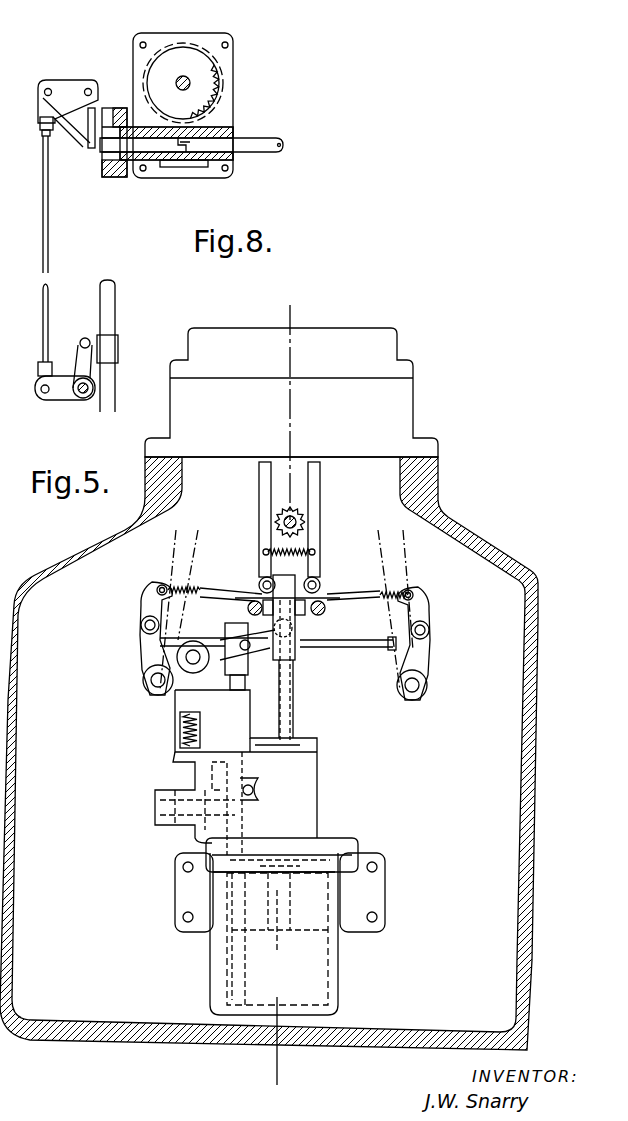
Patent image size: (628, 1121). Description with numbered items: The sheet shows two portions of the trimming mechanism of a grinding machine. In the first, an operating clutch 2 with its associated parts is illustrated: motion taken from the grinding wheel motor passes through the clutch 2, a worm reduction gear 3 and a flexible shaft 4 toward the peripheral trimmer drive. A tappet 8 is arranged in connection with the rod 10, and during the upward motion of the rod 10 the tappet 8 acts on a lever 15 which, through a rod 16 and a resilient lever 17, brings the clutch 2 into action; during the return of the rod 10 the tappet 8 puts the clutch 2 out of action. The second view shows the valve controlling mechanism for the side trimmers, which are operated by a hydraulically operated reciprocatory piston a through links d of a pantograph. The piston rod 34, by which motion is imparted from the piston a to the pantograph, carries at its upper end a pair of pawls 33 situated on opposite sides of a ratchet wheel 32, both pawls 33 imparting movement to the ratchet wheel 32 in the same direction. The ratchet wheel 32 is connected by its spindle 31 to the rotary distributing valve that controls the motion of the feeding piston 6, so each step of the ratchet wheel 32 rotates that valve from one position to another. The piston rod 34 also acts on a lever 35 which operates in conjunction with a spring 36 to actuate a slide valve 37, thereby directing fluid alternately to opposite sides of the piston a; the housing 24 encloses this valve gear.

In FIG. 8, the clutch 2 is at (106, 122).
In FIG. 8, the worm reduction gear 3 is at (193, 127).
In FIG. 8, the flexible shaft 4 is at (190, 80).
In FIG. 8, the tappet 8 is at (118, 353).
In FIG. 8, the rod 10 is at (110, 302).
In FIG. 8, the lever 15 is at (60, 380).
In FIG. 8, the rod 16 is at (49, 303).
In FIG. 8, the resilient lever 17 is at (65, 93).
In FIG. 5, the feeding piston 6 is at (284, 698).
In FIG. 5, the pump housing 24 is at (338, 972).
In FIG. 5, the spindle 31 is at (297, 521).
In FIG. 5, the ratchet wheel 32 is at (288, 514).
In FIG. 5, the pawls 33 is at (330, 481).
In FIG. 5, the rod 34 is at (296, 702).
In FIG. 5, the lever 35 is at (247, 655).
In FIG. 5, the spring 36 is at (180, 726).
In FIG. 5, the slide valve 37 is at (212, 778).
In FIG. 5, the reciprocatory piston a is at (252, 918).
In FIG. 5, the links d is at (412, 560).